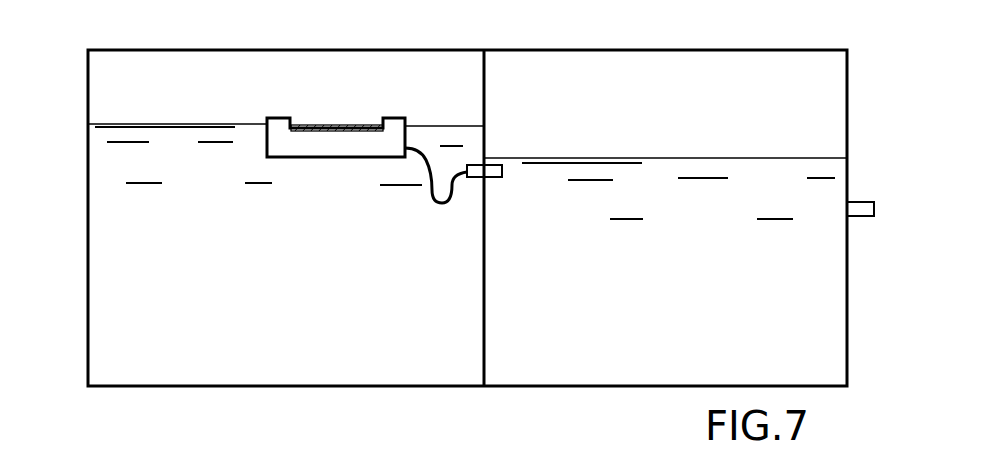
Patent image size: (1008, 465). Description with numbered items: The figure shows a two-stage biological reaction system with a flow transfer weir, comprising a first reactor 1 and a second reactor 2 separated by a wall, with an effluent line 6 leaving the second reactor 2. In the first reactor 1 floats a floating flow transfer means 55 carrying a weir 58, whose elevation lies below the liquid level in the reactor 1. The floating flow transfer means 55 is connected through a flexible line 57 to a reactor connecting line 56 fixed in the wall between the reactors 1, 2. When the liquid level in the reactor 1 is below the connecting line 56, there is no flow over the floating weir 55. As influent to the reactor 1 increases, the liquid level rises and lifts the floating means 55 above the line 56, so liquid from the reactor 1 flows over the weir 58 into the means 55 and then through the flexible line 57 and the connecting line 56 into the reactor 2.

The reactor 1 is at (380, 49).
The reactor 2 is at (652, 48).
The effluent line 6 is at (865, 201).
The floating flow transfer means 55 is at (305, 158).
The reactor connecting line 56 is at (497, 177).
The flexible line 57 is at (428, 196).
The weir 58 is at (312, 125).